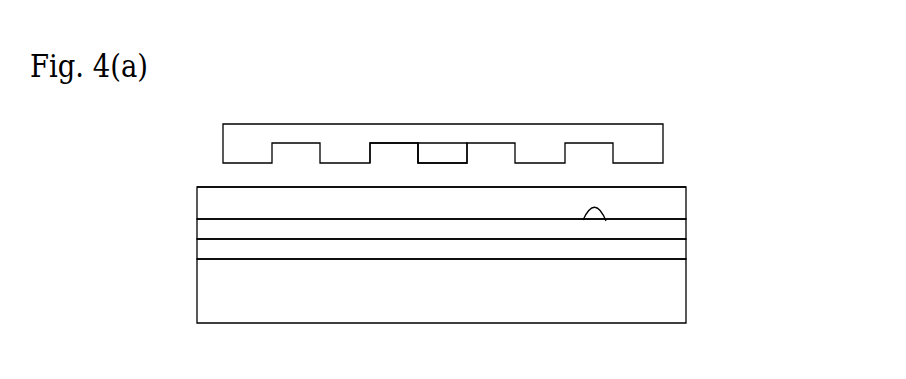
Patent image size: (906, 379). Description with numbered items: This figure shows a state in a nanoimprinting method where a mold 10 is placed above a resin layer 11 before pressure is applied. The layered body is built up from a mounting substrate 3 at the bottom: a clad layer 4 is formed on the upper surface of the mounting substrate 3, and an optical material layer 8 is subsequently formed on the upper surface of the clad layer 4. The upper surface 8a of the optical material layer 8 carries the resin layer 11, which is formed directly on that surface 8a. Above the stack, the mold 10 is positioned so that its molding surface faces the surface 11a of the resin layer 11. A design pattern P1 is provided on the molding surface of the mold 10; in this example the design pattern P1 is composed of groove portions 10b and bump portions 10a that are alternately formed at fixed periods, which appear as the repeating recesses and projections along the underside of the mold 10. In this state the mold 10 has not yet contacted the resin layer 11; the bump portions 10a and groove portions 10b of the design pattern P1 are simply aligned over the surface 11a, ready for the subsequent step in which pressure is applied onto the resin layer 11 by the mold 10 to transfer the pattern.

The mold 10 is at (648, 110).
The bump portions 10a is at (442, 150).
The groove portions 10b is at (398, 143).
The design pattern P1 is at (548, 165).
The surface of resin layer 11a is at (676, 187).
The resin layer 11 is at (676, 203).
The optical material layer 8 is at (676, 228).
The upper surface of optical material layer 8a is at (606, 221).
The clad layer 4 is at (676, 248).
The mounting substrate 3 is at (676, 292).